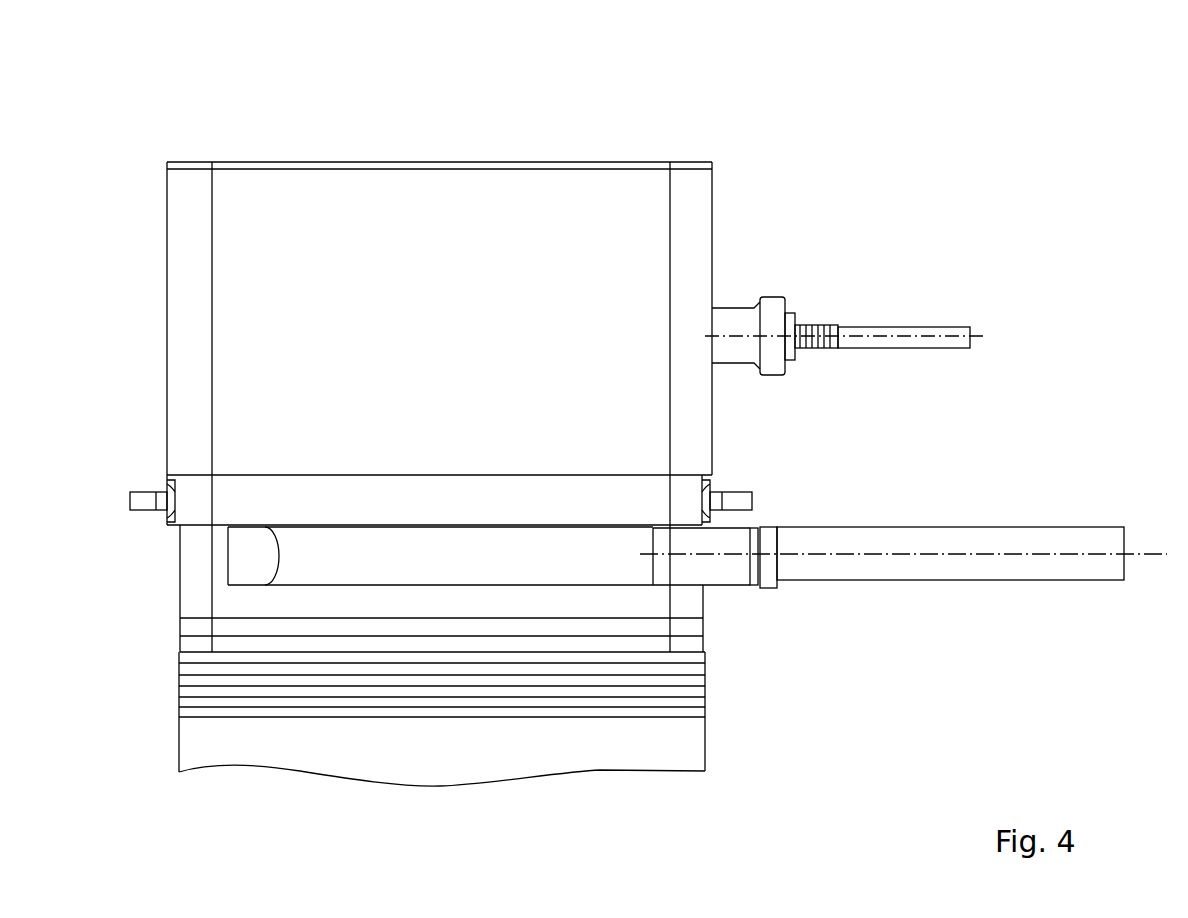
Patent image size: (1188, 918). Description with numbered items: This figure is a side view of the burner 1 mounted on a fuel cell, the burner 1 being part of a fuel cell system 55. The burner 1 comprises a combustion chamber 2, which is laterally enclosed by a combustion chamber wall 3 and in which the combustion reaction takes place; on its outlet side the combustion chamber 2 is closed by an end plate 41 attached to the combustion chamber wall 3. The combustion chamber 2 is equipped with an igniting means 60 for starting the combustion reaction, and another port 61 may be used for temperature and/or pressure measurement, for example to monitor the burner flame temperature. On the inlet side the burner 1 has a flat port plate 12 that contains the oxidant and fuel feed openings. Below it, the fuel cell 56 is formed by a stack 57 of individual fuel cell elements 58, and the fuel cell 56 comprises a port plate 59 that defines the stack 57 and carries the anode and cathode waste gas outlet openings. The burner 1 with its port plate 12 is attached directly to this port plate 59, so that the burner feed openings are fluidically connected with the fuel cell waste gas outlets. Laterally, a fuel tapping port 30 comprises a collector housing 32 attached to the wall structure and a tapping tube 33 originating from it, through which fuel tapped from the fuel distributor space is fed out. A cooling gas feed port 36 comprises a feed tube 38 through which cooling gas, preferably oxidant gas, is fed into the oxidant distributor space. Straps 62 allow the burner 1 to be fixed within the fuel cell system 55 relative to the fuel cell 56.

The burner 1 is at (958, 172).
The combustion chamber 2 is at (163, 257).
The combustion chamber wall 3 is at (195, 322).
The port plate 12 is at (195, 627).
The fuel tapping port 30 is at (745, 592).
The collector housing 32 is at (467, 548).
The tapping tube 33 is at (753, 530).
The cooling gas feed port 36 is at (1070, 522).
The feed tube 38 is at (1032, 533).
The end plate 41 is at (444, 163).
The fuel cell system 55 is at (995, 280).
The fuel cell 56 is at (175, 702).
The stack 57 is at (180, 737).
The fuel cell elements 58 is at (540, 698).
The port plate 59 is at (192, 641).
The igniting means 60 is at (777, 305).
The port 61 is at (918, 328).
The straps 62 is at (143, 490).